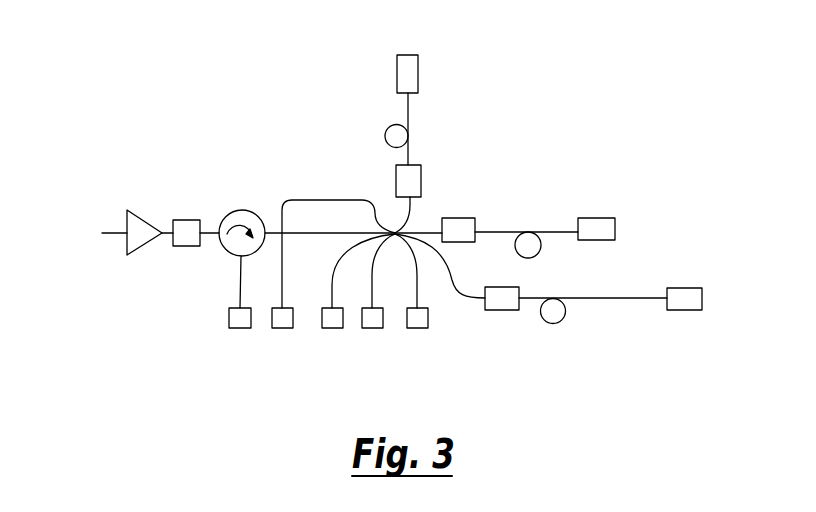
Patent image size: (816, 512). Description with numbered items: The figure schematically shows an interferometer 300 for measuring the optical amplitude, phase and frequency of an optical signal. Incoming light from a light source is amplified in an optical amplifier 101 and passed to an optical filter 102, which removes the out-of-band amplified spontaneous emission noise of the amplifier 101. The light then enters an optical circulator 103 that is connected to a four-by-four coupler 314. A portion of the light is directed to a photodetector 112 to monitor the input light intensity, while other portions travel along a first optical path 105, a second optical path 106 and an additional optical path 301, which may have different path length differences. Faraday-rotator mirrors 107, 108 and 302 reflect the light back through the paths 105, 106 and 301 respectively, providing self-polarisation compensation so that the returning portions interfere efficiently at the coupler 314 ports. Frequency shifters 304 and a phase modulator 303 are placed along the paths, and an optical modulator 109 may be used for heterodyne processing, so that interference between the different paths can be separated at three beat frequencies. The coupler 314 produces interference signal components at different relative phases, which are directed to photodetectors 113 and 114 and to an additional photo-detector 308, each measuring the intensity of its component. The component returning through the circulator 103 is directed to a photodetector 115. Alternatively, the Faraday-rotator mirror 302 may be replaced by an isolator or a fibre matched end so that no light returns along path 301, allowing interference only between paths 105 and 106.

The interferometer 300 is at (270, 95).
The optical amplifier 101 is at (138, 208).
The optical filter 102 is at (188, 220).
The optical circulator 103 is at (243, 208).
The photodetector 115 is at (233, 329).
The additional photo-detector 308 is at (280, 329).
The photodetector 114 is at (330, 329).
The photodetector 113 is at (370, 329).
The photodetector 112 is at (412, 329).
The 4×4 coupler 314 is at (395, 236).
The frequency shifter 304 is at (401, 224).
The second optical path 106 is at (408, 112).
The Faraday-rotator mirror 108 is at (418, 62).
The first optical path 105 is at (497, 230).
The optical modulator 109 is at (530, 230).
The Faraday-rotator mirror 107 is at (603, 218).
The additional optical path 301 is at (620, 300).
The phase modulator 303 is at (557, 323).
The Faraday-rotator mirror 302 is at (687, 310).